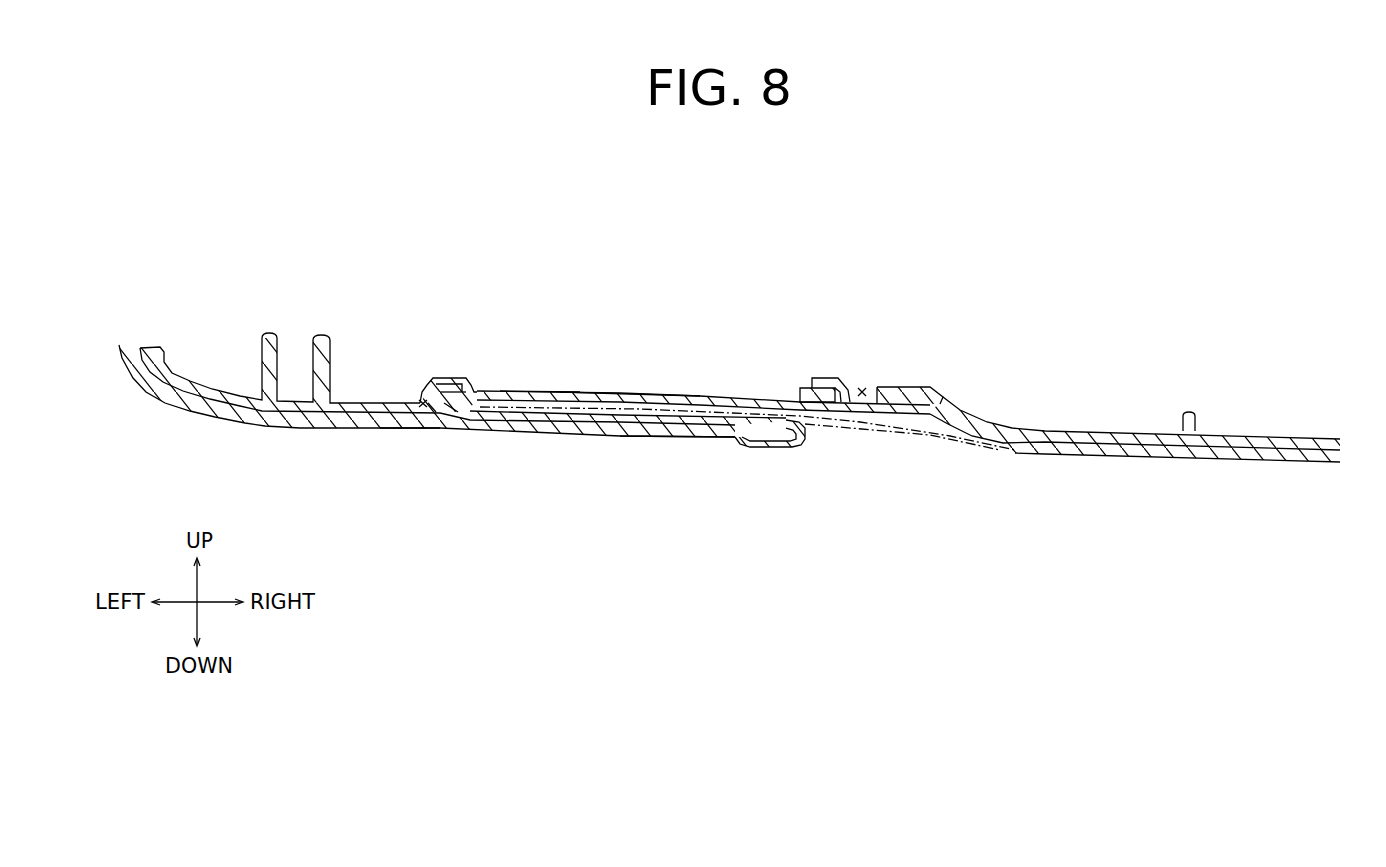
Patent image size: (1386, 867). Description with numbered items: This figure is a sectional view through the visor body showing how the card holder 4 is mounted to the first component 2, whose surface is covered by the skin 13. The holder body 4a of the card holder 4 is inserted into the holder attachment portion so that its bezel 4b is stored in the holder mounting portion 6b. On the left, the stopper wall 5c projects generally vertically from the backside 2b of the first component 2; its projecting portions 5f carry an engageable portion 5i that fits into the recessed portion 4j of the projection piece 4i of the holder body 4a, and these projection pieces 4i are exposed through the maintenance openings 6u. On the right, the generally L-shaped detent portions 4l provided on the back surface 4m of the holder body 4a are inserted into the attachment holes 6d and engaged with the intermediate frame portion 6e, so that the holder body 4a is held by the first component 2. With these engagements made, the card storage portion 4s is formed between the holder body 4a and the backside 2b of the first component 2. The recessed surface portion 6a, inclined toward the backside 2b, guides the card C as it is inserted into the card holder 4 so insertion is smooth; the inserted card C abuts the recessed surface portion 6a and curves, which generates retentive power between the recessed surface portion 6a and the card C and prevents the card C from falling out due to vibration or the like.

The first component 2 is at (372, 402).
The backside of the first component 2b is at (703, 408).
The card holder 4 is at (657, 368).
The holder body 4a is at (616, 388).
The bezel 4b is at (782, 458).
The projection piece 4i is at (446, 378).
The recessed portion of the projection piece 4j is at (437, 427).
The detent portion 4l is at (827, 380).
The back surface of the holder body 4m is at (540, 385).
The card storage portion 4s is at (667, 430).
The stopper wall 5c is at (422, 383).
The projecting portion 5f is at (453, 427).
The engageable portion 5i is at (455, 375).
The recessed surface portion 6a is at (965, 407).
The holder mounting portion 6b is at (918, 393).
The attachment hole 6d is at (863, 390).
The intermediate frame portion 6e is at (800, 393).
The maintenance opening 6u is at (417, 433).
The skin 13 is at (552, 430).
The card C is at (905, 437).